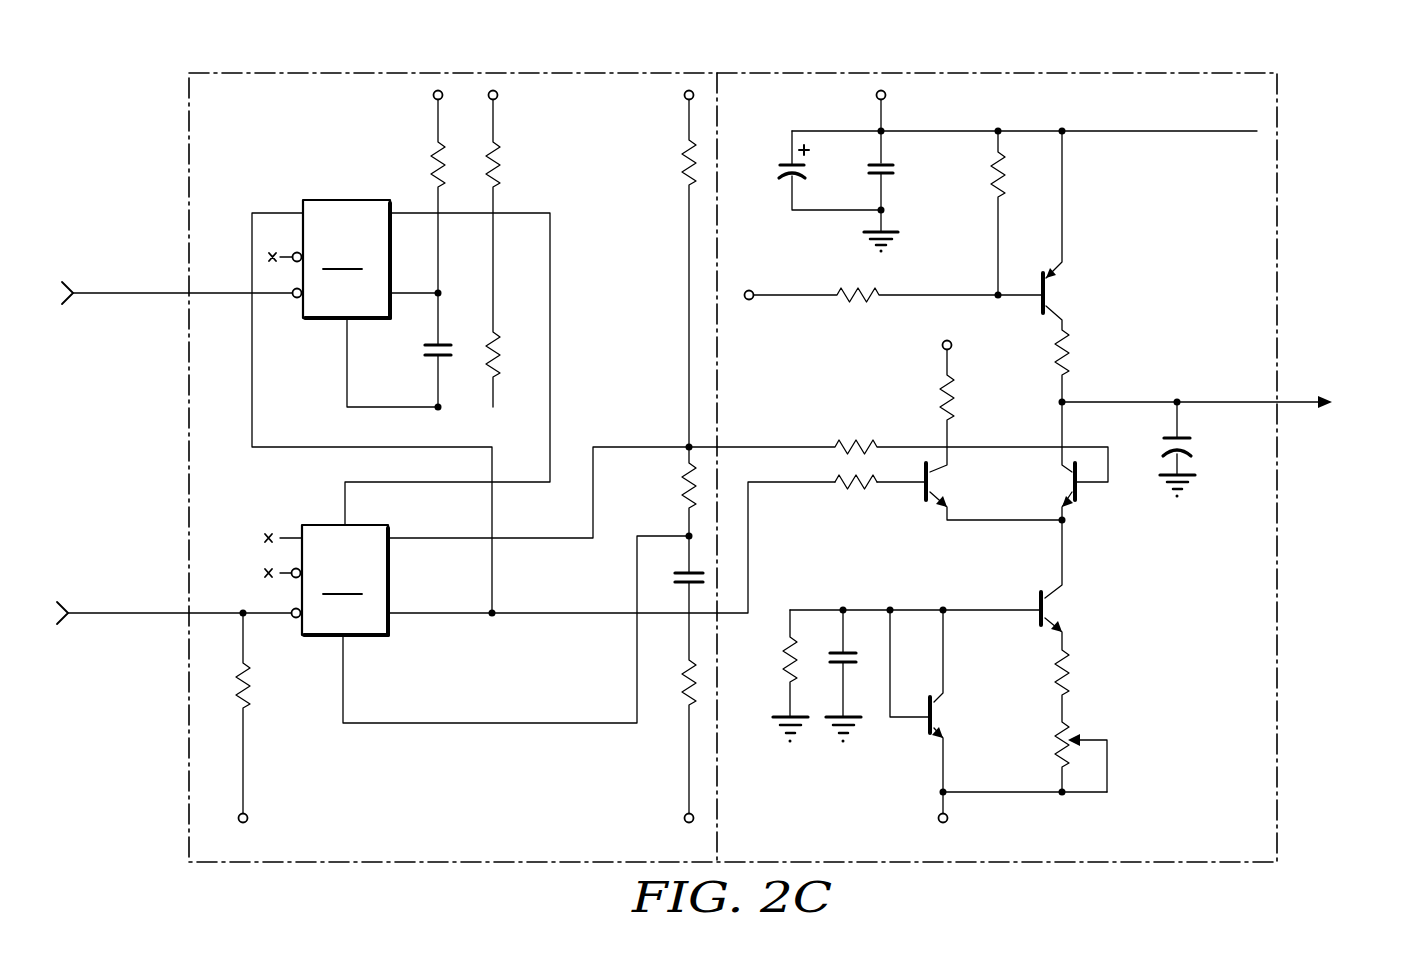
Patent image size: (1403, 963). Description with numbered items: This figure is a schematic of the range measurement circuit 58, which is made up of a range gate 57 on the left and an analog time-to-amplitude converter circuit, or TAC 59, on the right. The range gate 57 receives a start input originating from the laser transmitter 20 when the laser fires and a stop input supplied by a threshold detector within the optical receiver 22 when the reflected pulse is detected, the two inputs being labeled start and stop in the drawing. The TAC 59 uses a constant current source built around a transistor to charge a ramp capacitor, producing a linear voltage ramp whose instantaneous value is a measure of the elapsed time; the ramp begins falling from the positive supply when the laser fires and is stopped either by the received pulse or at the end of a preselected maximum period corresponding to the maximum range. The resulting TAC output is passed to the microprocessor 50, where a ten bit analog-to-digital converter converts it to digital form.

The range gate 57 is at (548, 73).
The range measurement circuit 58 is at (1300, 94).
The analog time-to-amplitude converter circuit (TAC) 59 is at (1203, 73).
The laser transmitter 20 is at (177, 296).
The optical receiver 22 is at (174, 616).
The microprocessor 50 is at (1343, 404).